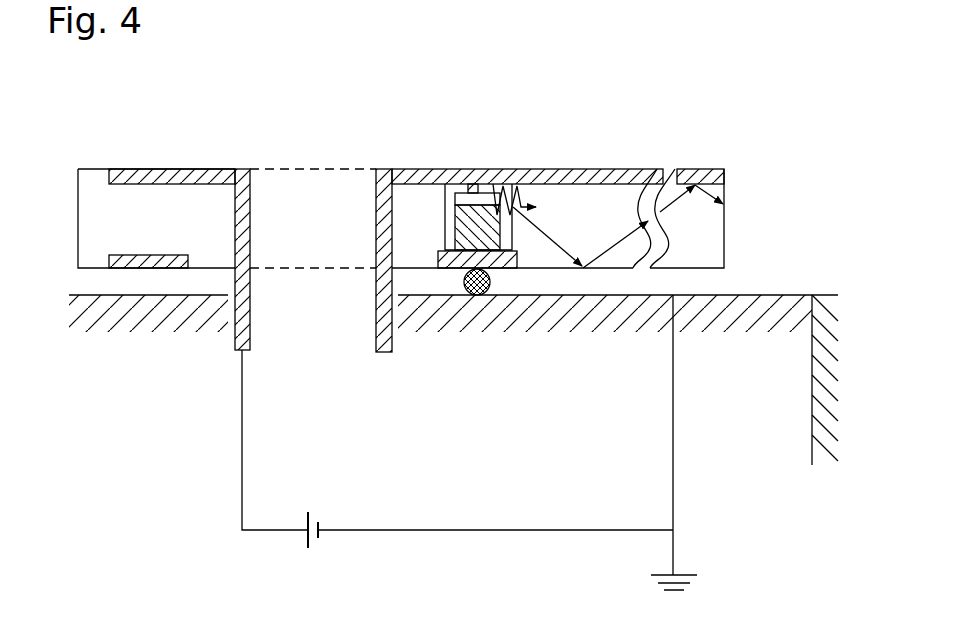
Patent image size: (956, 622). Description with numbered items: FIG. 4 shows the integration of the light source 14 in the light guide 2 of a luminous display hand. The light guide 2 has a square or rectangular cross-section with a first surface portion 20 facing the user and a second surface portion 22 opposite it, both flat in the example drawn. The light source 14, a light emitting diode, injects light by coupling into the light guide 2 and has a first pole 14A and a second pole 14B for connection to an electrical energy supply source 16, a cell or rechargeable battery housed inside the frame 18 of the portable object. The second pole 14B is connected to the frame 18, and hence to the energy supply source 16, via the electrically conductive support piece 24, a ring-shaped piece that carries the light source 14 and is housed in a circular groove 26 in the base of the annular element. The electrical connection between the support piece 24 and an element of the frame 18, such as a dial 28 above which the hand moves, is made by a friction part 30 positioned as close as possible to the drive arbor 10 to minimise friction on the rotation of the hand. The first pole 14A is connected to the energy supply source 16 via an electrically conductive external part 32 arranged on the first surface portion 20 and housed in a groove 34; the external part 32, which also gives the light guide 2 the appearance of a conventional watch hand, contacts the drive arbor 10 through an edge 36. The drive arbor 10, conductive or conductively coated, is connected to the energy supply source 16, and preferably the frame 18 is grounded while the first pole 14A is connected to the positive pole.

The light guide 2 is at (578, 272).
The drive arbor 10 is at (250, 248).
The light source 14 is at (488, 237).
The first pole 14A is at (475, 192).
The second pole 14B is at (452, 257).
The electrical energy supply source 16 is at (302, 535).
The frame 18 is at (814, 422).
The first surface portion 20 is at (631, 185).
The second surface portion 22 is at (693, 268).
The electrically conductive support piece 24 is at (167, 256).
The circular groove 26 is at (122, 252).
The dial 28 is at (87, 300).
The friction part 30 is at (486, 292).
The electrically conductive external part 32 is at (184, 178).
The groove 34 is at (205, 186).
The edge 36 is at (385, 180).